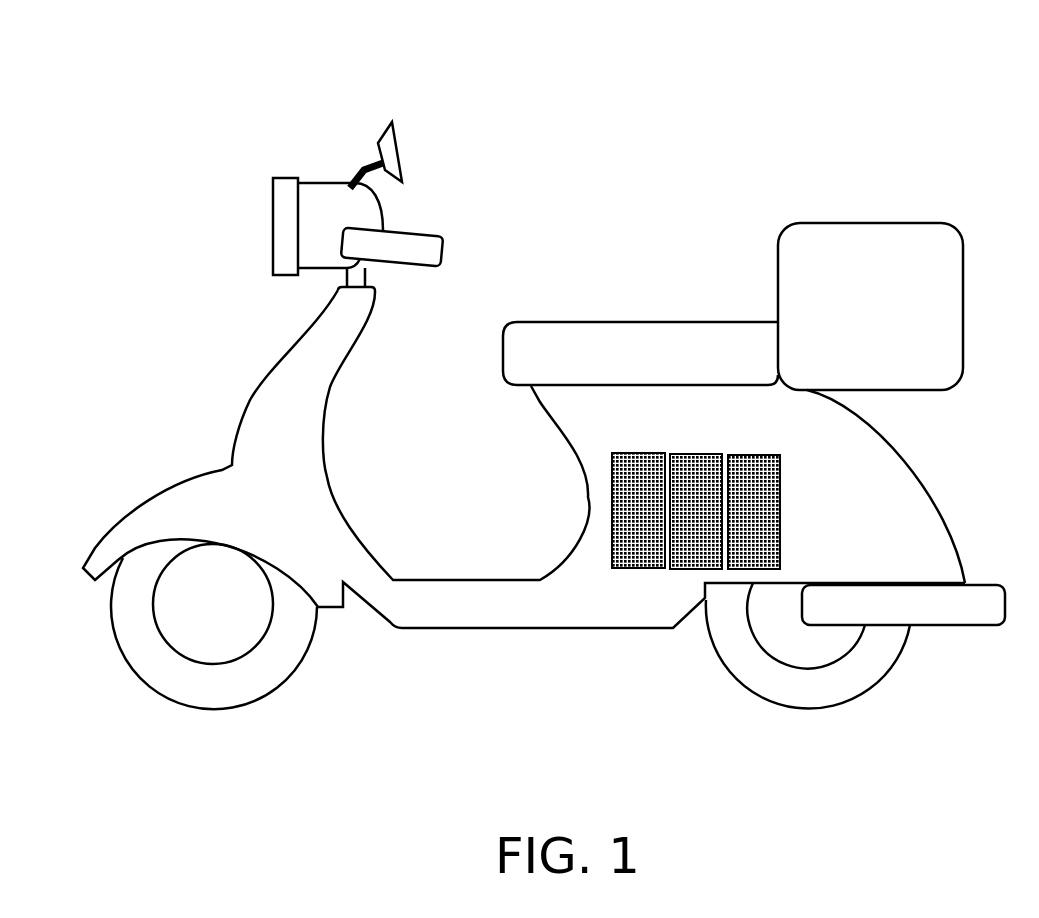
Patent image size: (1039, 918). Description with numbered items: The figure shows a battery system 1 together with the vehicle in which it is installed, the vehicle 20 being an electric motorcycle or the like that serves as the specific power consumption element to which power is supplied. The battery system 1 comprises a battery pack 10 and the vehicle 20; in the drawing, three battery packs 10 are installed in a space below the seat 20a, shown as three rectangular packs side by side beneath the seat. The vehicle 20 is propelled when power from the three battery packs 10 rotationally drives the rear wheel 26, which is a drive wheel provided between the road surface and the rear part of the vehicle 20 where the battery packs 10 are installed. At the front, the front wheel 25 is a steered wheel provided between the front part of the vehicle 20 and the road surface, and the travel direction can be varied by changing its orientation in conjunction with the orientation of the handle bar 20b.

The battery system 1 is at (808, 86).
The battery pack 10 is at (753, 467).
The vehicle 20 is at (242, 135).
The seat 20a is at (575, 338).
The handle bar 20b is at (420, 245).
The front wheel 25 is at (228, 685).
The rear wheel 26 is at (830, 692).